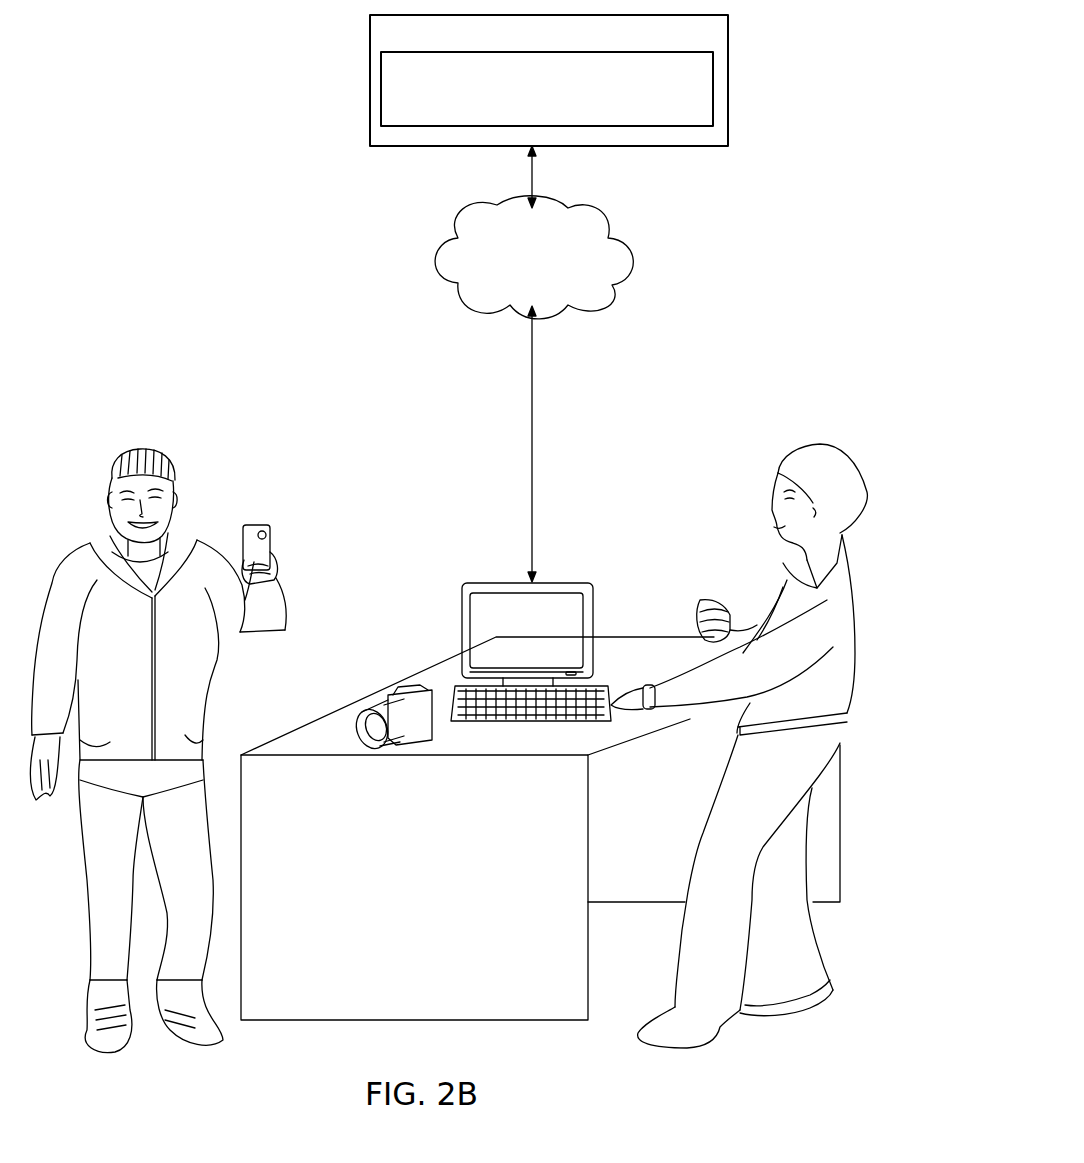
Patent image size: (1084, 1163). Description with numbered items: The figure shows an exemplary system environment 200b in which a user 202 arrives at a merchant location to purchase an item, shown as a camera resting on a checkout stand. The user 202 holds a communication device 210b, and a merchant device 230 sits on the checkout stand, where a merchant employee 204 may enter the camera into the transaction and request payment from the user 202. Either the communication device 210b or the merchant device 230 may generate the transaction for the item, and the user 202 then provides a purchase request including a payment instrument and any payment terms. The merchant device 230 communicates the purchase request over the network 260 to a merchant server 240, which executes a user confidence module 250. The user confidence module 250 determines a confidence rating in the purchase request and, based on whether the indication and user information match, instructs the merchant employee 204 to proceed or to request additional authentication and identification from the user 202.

The environment 200b is at (837, 72).
The user 202 is at (148, 452).
The merchant employee 204 is at (772, 508).
The communication device 210b is at (258, 525).
The merchant device 230 is at (567, 588).
The merchant server 240 is at (549, 80).
The user confidence module 250 is at (547, 89).
The network 260 is at (534, 257).